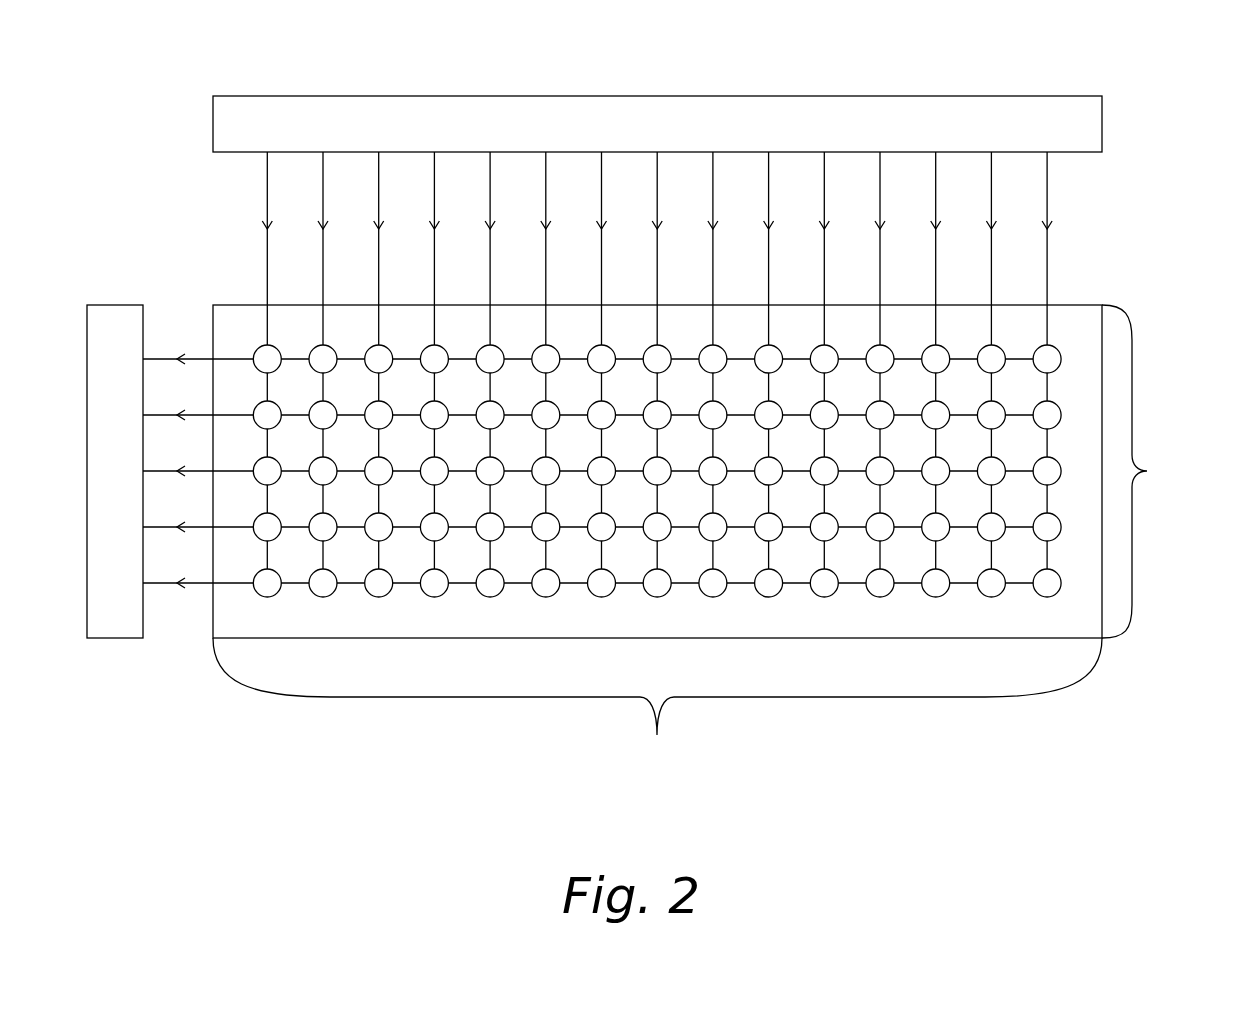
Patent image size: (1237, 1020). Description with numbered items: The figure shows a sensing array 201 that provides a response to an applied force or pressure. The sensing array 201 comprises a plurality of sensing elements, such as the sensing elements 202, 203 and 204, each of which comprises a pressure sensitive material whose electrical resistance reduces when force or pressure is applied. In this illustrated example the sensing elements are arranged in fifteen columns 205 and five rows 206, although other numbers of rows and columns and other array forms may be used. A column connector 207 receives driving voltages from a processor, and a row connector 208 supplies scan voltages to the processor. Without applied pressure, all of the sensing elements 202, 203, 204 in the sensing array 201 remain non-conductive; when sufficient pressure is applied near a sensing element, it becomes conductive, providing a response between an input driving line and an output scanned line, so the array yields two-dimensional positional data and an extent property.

The sensing array 201 is at (455, 630).
The sensing element 202 is at (263, 357).
The sensing element 203 is at (318, 357).
The sensing element 204 is at (385, 357).
The columns 205 is at (657, 708).
The rows 206 is at (1151, 471).
The column connector 207 is at (1097, 125).
The row connector 208 is at (115, 632).